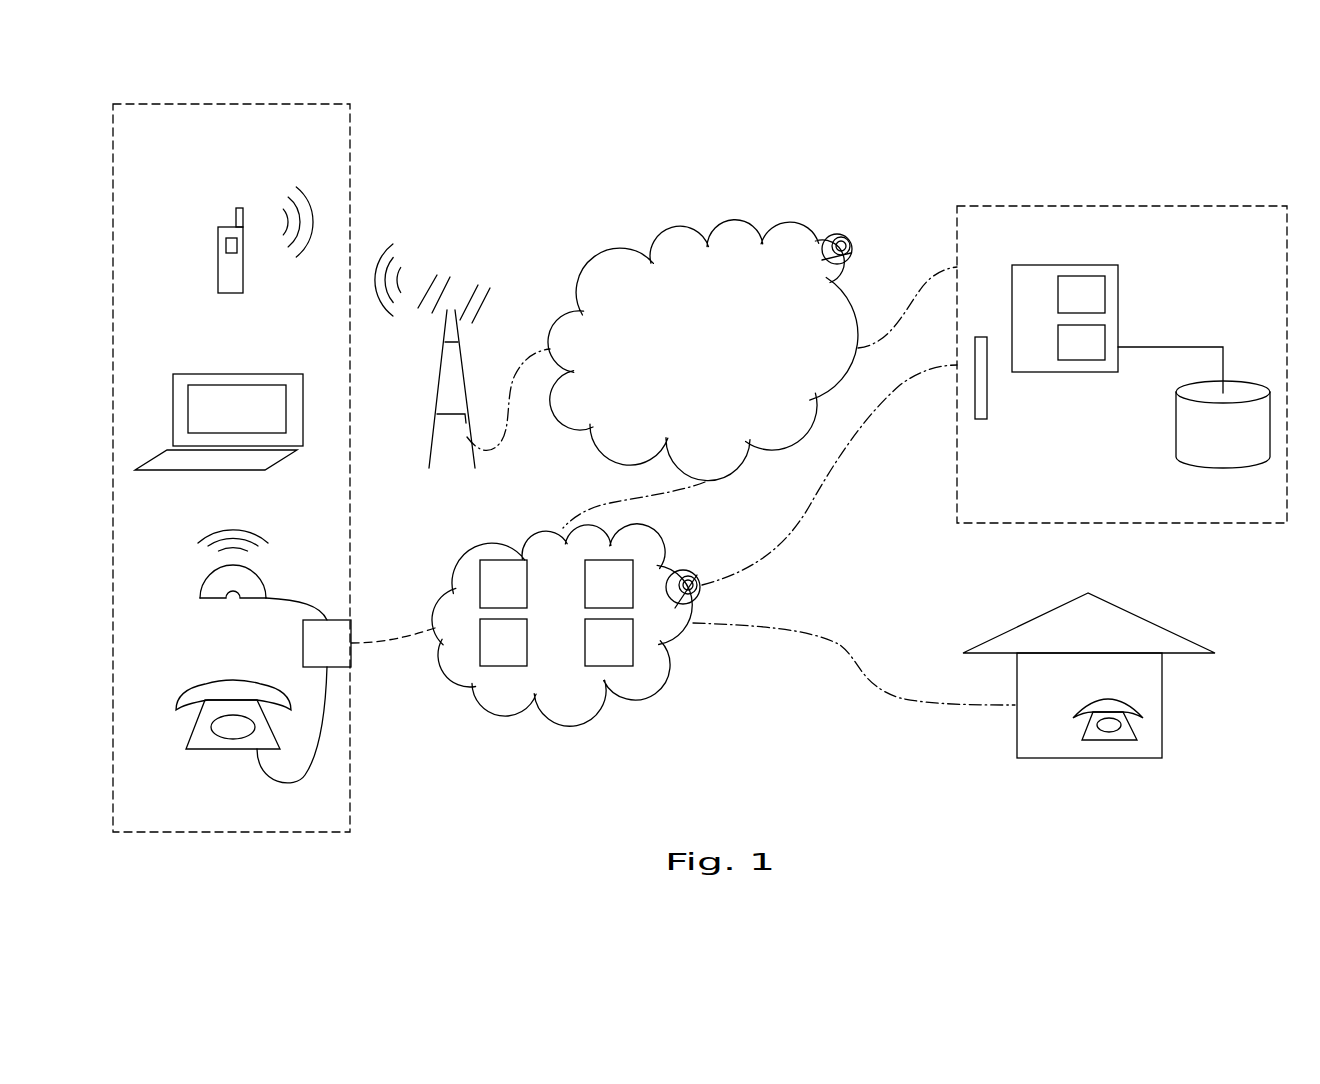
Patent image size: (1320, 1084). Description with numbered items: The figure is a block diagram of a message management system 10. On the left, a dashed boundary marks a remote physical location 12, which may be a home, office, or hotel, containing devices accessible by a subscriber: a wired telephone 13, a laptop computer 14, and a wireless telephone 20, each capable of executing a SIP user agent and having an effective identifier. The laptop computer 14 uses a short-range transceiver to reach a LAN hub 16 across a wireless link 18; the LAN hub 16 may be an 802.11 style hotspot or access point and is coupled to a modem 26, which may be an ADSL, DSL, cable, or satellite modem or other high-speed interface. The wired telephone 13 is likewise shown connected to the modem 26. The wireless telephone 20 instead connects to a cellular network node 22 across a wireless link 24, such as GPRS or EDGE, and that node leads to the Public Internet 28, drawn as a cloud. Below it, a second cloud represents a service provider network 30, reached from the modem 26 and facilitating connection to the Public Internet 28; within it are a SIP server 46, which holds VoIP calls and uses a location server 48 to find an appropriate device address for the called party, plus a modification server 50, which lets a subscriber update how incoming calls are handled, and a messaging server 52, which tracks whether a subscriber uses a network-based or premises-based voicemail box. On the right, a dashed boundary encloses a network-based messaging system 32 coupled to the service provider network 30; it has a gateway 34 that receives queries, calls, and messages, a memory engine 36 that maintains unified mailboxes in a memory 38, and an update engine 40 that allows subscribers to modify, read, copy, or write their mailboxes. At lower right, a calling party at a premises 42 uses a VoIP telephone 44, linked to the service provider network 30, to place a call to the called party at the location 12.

The message management system 10 is at (901, 164).
The remote physical location 12 is at (318, 841).
The wired telephone 13 is at (206, 755).
The laptop computer 14 is at (234, 420).
The LAN hub 16 is at (187, 597).
The wireless link 18 is at (221, 525).
The wireless telephone 20 is at (206, 296).
The cellular network node 22 is at (424, 441).
The wireless link 24 is at (315, 257).
The modem 26 is at (315, 655).
The Public Internet 28 is at (680, 360).
The service provider network 30 is at (551, 640).
The network-based messaging system 32 is at (1003, 532).
The gateway 34 is at (934, 331).
The memory engine 36 is at (1081, 294).
The memory 38 is at (1211, 452).
The update engine 40 is at (1081, 342).
The premises 42 is at (1083, 638).
The VoIP telephone 44 is at (1061, 714).
The SIP server 46 is at (597, 655).
The location server 48 is at (491, 655).
The modification server 50 is at (597, 597).
The messaging server 52 is at (491, 597).